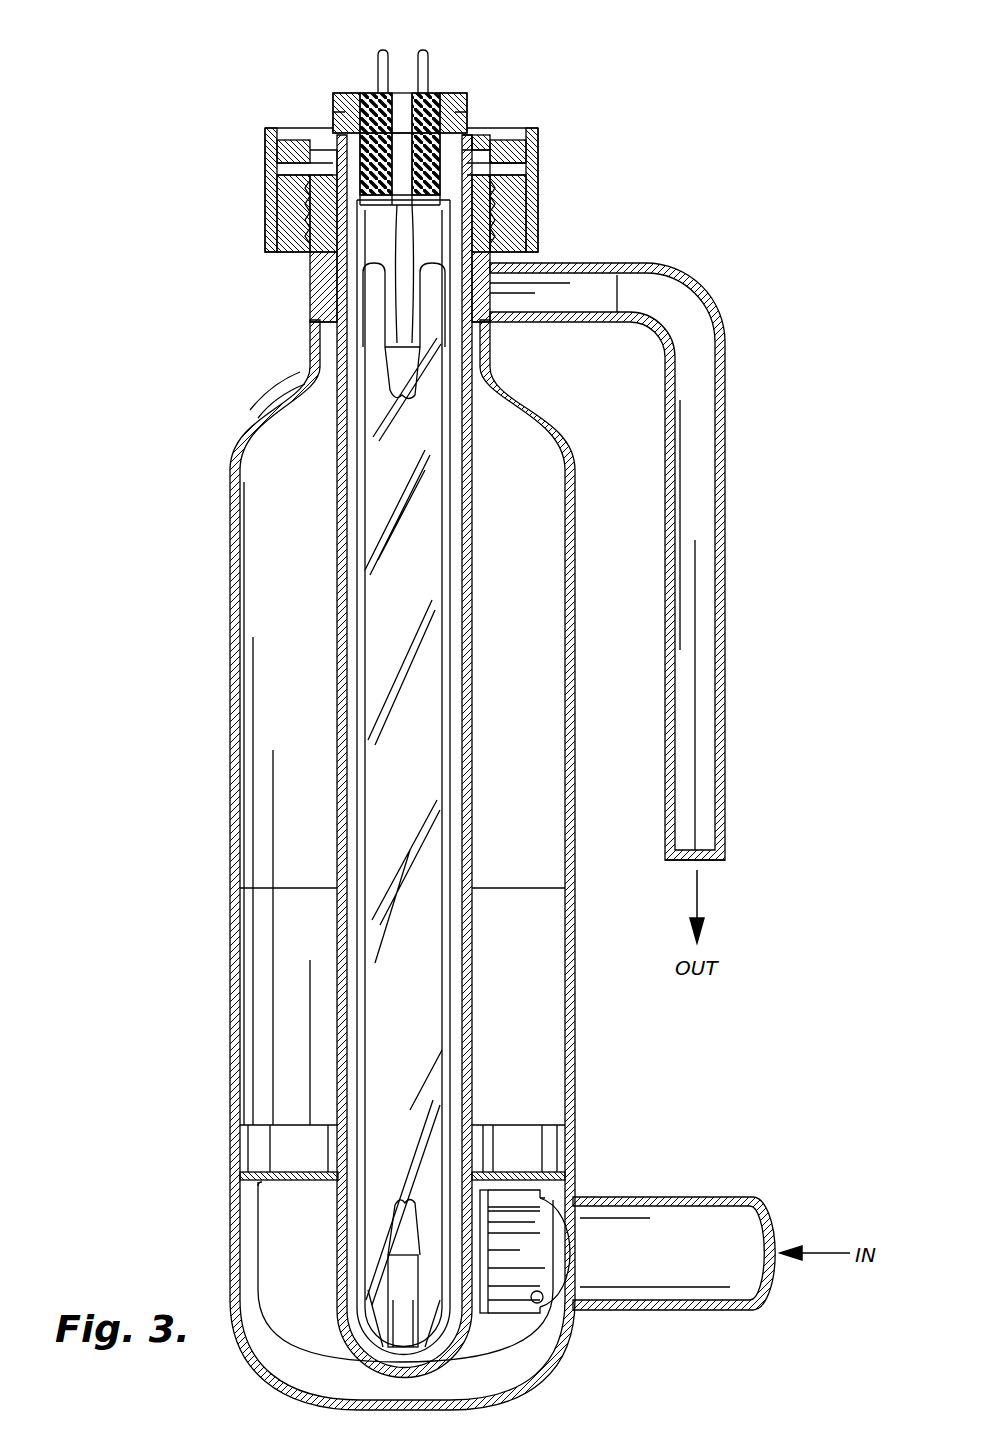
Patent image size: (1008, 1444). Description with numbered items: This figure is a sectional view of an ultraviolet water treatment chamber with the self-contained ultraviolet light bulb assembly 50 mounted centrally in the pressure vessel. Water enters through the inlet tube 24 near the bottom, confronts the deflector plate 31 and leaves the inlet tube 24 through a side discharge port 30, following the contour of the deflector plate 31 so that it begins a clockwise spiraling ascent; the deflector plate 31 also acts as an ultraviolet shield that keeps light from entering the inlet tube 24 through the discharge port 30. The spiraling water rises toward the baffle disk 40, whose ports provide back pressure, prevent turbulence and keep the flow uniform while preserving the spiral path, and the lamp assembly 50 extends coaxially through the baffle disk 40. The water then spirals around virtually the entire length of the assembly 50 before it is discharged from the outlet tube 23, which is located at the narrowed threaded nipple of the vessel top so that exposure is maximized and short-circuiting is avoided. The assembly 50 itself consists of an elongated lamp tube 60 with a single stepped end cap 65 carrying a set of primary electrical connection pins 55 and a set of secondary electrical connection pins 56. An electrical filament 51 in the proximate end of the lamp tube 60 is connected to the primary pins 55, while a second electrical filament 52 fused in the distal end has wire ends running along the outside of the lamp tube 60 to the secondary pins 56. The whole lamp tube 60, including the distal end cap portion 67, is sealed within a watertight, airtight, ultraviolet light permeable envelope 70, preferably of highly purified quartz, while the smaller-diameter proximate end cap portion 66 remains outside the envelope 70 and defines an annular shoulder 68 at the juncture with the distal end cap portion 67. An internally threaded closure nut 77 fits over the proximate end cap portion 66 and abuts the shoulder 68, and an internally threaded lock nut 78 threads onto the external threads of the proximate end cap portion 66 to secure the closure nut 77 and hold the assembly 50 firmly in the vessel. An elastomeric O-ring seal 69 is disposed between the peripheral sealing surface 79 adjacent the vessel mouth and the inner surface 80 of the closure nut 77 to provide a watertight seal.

The outlet tube 23 is at (707, 703).
The inlet tube 24 is at (682, 1259).
The side discharge port 30 is at (545, 1297).
The deflector plate 31 is at (490, 1293).
The baffle disk 40 is at (258, 1185).
The ultraviolet light bulb assembly 50 is at (282, 617).
The electrical filament 51 is at (390, 396).
The second electrical filament 52 is at (393, 1218).
The primary electrical connection pins 55 is at (384, 50).
The secondary electrical connection pins 56 is at (428, 52).
The elongated lamp tube 60 is at (300, 777).
The stepped end cap 65 is at (317, 147).
The proximate end cap portion 66 is at (445, 90).
The distal end cap portion 67 is at (470, 207).
The annular shoulder 68 is at (333, 112).
The elastomeric O-ring seal 69 is at (520, 187).
The ultraviolet light permeable envelope 70 is at (350, 1068).
The internally threaded closure nut 77 is at (323, 150).
The internally threaded lock nut 78 is at (467, 110).
The peripheral sealing surface 79 is at (320, 196).
The inner surface 80 is at (310, 197).